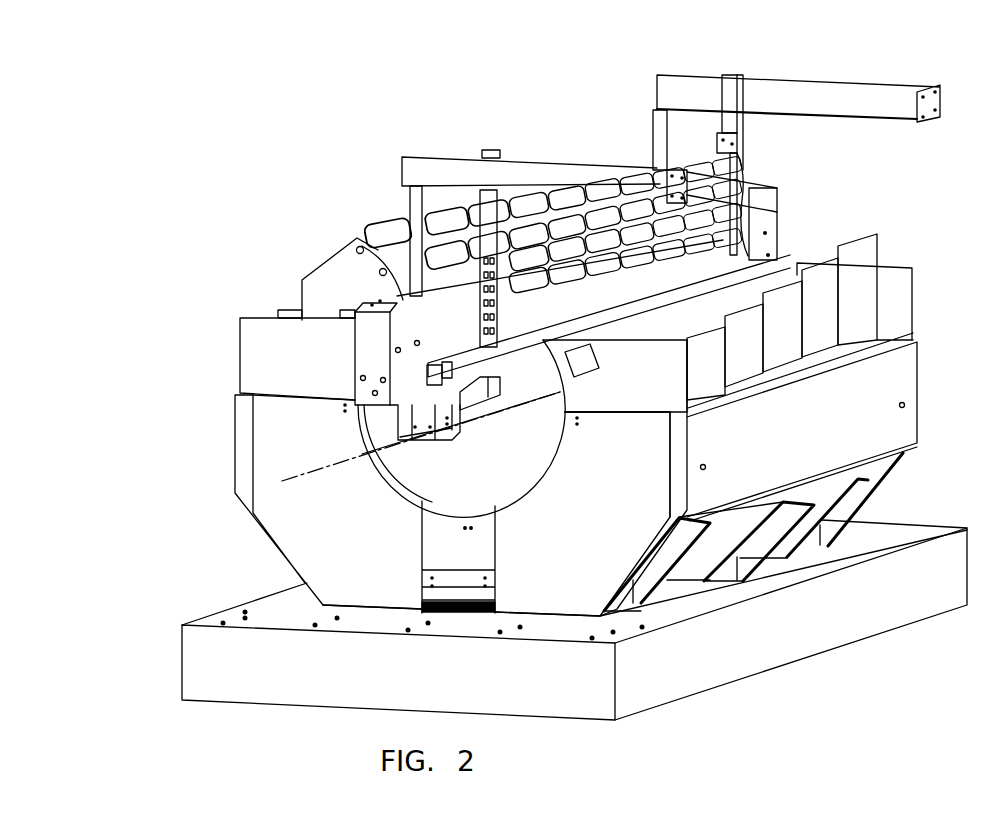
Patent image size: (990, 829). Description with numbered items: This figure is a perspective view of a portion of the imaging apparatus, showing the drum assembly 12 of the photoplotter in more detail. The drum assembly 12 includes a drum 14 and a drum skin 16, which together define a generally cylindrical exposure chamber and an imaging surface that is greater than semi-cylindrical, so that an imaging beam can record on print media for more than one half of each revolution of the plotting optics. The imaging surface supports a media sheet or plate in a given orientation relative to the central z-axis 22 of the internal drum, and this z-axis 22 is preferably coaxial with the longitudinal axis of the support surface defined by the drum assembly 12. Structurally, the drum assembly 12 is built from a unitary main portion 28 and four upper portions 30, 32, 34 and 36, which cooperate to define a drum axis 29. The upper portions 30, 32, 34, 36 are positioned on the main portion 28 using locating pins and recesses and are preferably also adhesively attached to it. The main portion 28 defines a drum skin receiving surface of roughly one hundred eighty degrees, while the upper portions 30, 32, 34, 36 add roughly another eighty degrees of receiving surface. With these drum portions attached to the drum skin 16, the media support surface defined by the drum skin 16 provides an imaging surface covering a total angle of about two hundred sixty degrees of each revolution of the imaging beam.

The drum assembly 12 is at (207, 381).
The drum 14 is at (253, 527).
The drum skin 16 is at (400, 487).
The z-axis 22 is at (292, 479).
The drum axis 29 is at (421, 436).
The unitary main portion 28 is at (352, 531).
The upper portion 30 is at (234, 318).
The upper portion 32 is at (640, 427).
The upper portion 34 is at (833, 378).
The upper portion 36 is at (369, 233).